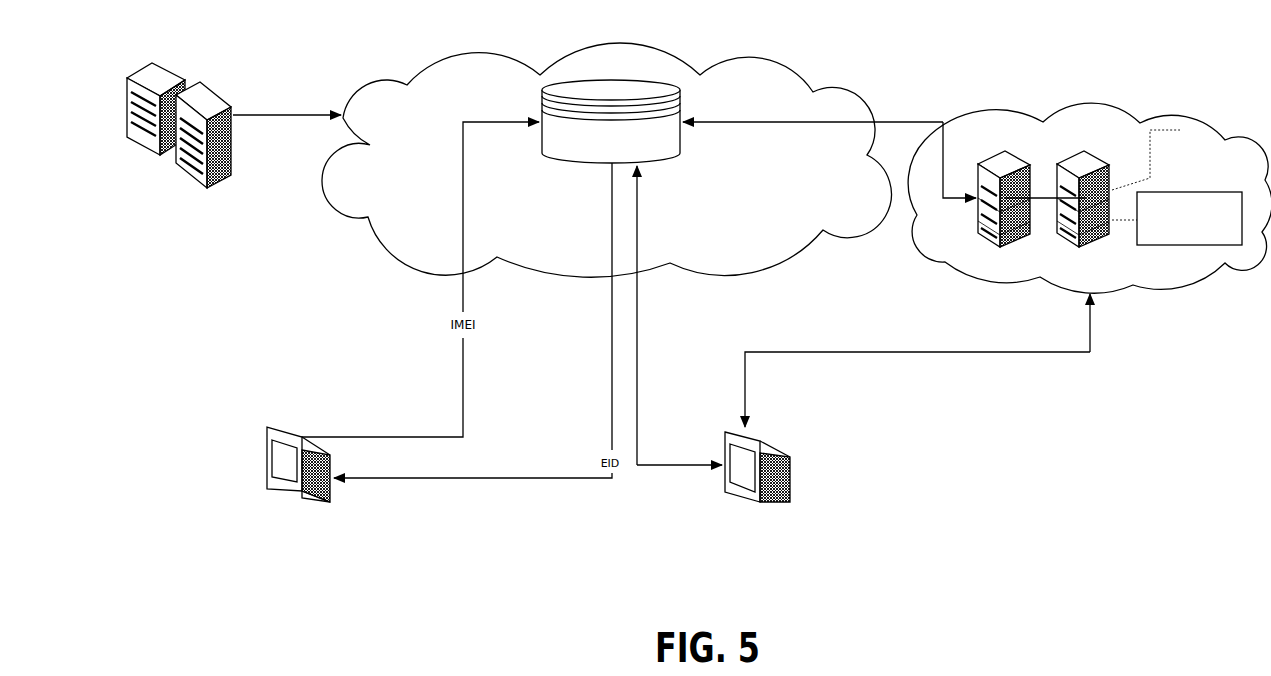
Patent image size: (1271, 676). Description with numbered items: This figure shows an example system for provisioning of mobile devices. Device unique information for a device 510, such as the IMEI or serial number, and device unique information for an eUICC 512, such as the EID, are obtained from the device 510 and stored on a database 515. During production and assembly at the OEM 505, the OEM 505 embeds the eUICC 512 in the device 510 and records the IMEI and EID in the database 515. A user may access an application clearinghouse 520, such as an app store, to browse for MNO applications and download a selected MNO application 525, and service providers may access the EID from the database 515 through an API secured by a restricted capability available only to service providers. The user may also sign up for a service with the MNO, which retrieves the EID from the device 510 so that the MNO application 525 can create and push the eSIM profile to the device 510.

The OEM 505 is at (177, 80).
The database 515 is at (693, 78).
The application clearinghouse 520 is at (1089, 198).
The MNO application 525 is at (1189, 218).
The device 510 is at (265, 462).
The eUICC 512 is at (318, 502).